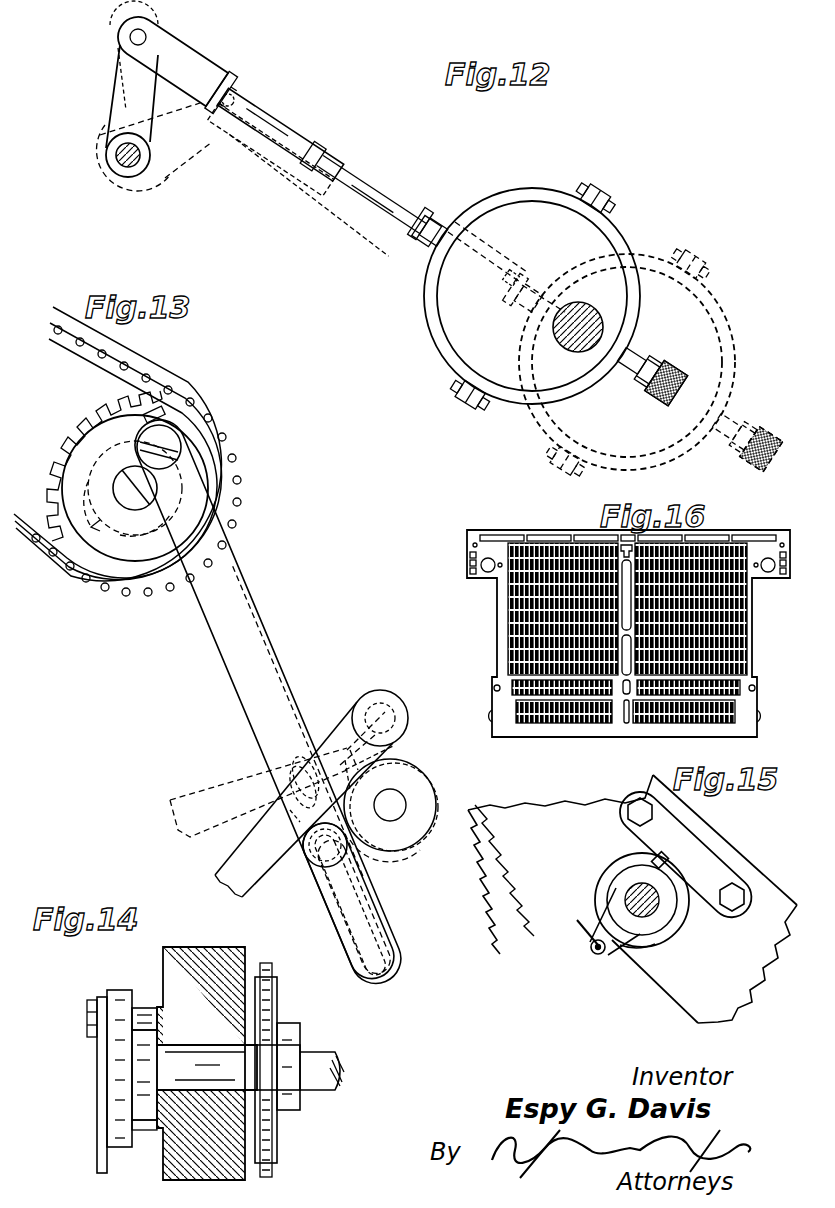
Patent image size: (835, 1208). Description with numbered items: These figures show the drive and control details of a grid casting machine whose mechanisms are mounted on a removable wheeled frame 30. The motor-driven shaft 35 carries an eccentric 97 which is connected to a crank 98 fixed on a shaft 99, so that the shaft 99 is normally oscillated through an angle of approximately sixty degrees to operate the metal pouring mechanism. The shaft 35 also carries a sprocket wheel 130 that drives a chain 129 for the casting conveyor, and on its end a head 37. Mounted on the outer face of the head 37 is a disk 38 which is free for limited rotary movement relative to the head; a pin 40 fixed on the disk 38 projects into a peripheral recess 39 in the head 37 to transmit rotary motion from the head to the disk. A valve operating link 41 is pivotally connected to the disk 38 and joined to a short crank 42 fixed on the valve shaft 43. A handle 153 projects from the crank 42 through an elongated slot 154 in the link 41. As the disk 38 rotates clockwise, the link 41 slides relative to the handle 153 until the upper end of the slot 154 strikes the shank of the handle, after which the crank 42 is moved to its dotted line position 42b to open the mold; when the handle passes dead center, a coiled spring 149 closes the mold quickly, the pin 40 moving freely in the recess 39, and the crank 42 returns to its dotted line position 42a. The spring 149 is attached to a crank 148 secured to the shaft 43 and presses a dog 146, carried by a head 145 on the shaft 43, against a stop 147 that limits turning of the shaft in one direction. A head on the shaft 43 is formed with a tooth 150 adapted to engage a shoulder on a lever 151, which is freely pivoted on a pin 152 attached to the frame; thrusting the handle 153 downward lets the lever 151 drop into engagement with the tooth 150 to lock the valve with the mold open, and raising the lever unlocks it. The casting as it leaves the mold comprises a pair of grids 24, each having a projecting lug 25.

In FIG. 12, the eccentric 97 is at (595, 240).
In FIG. 12, the shaft 35 is at (582, 306).
In FIG. 14, the shaft 35 is at (310, 1052).
In FIG. 12, the crank 98 is at (122, 90).
In FIG. 12, the shaft 99 is at (116, 158).
In FIG. 13, the disk 38 is at (75, 470).
In FIG. 14, the disk 38 is at (118, 1000).
In FIG. 13, the sprocket wheel 130 is at (82, 428).
In FIG. 14, the sprocket wheel 130 is at (270, 1138).
In FIG. 13, the peripheral recess 39 is at (172, 505).
In FIG. 14, the peripheral recess 39 is at (145, 1068).
In FIG. 13, the head 37 is at (128, 535).
In FIG. 14, the head 37 is at (145, 1112).
In FIG. 13, the chain 129 is at (113, 362).
In FIG. 13, the pin 40 is at (180, 430).
In FIG. 14, the pin 40 is at (143, 1012).
In FIG. 13, the valve operating link 41 is at (235, 607).
In FIG. 14, the valve operating link 41 is at (103, 1155).
In FIG. 13, the elongated slot 154 is at (350, 920).
In FIG. 13, the handle 153 is at (314, 862).
In FIG. 13, the pin 152 is at (384, 705).
In FIG. 13, the valve shaft 43 is at (398, 806).
In FIG. 15, the valve shaft 43 is at (636, 893).
In FIG. 13, the tooth 150 is at (358, 800).
In FIG. 13, the crank 42 is at (372, 850).
In FIG. 13, the dotted line position of crank 42a is at (300, 780).
In FIG. 13, the dotted line position of crank 42b is at (295, 835).
In FIG. 13, the lever 151 is at (300, 808).
In FIG. 14, the frame 30 is at (205, 956).
In FIG. 15, the coiled spring 149 is at (540, 892).
In FIG. 15, the stop 147 is at (708, 862).
In FIG. 15, the dog 146 is at (665, 856).
In FIG. 15, the head 145 is at (655, 940).
In FIG. 15, the crank 148 is at (610, 940).
In FIG. 16, the projecting lug 25 is at (495, 545).
In FIG. 16, the grid 24 is at (566, 545).